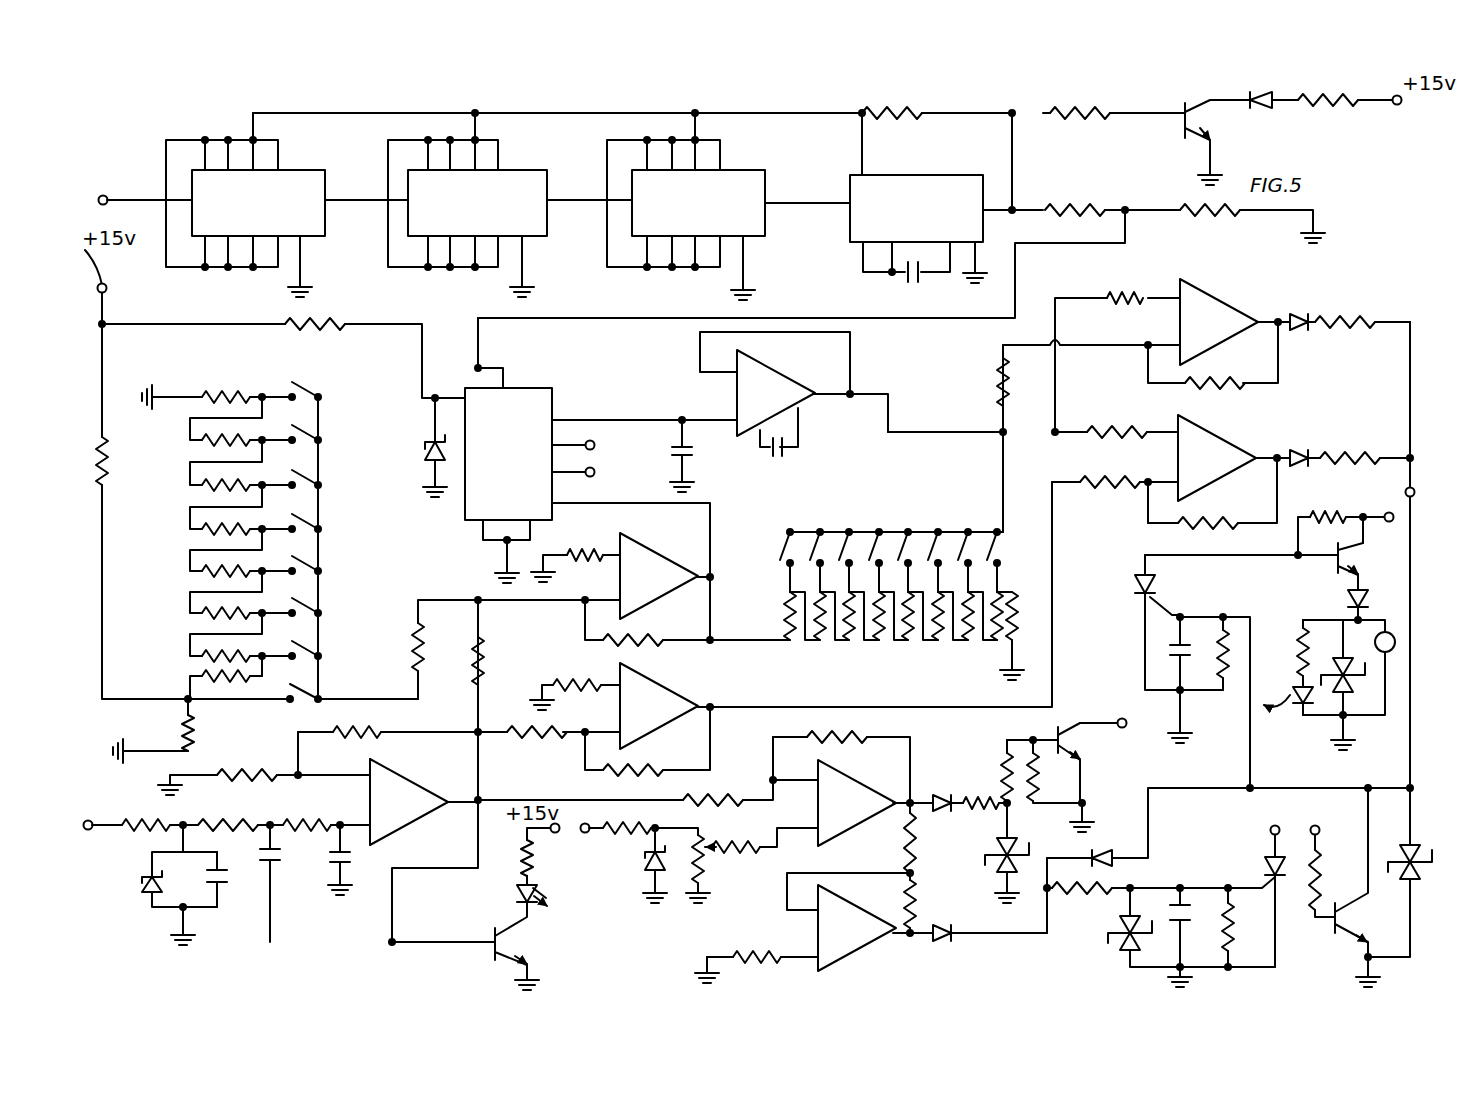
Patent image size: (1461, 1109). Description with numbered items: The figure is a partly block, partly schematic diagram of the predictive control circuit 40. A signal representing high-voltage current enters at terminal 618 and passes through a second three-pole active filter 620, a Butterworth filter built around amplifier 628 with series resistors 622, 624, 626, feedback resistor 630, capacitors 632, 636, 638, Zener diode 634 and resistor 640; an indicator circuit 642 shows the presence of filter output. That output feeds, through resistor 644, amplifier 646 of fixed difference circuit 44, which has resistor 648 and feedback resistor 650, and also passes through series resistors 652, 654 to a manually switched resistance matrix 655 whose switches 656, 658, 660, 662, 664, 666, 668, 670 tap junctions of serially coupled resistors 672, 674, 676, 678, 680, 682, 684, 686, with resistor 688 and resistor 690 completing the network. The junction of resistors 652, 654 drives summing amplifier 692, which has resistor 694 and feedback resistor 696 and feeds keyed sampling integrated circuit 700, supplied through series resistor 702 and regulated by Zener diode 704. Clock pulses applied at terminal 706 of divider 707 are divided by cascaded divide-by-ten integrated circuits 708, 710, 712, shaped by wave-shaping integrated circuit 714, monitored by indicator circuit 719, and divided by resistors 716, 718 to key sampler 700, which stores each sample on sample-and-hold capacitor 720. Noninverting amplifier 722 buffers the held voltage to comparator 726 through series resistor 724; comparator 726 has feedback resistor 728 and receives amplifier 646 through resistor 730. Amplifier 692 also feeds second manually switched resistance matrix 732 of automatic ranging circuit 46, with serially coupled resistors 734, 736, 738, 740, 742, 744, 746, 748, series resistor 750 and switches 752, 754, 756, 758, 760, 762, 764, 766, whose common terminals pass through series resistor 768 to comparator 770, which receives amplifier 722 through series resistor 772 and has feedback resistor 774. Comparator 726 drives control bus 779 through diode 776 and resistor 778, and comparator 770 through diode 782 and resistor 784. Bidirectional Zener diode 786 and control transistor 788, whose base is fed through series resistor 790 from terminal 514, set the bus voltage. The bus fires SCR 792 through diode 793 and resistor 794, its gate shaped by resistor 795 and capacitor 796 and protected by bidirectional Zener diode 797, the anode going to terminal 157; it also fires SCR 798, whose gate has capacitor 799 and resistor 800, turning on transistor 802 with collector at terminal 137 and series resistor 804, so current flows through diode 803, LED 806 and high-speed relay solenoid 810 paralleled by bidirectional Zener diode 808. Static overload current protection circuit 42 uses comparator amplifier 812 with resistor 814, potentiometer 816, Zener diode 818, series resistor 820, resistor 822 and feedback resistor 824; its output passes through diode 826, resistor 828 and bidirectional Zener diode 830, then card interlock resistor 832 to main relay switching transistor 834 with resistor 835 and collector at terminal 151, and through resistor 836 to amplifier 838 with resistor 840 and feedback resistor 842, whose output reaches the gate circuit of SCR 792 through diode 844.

The predictive control circuit 40 is at (428, 314).
The static overload current protection circuit 42 is at (664, 930).
The fixed difference circuit 44 is at (1128, 498).
The automatic ranging circuit 46 is at (950, 345).
The terminal 137 is at (1391, 513).
The terminal 151 is at (1125, 718).
The terminal 157 is at (1277, 825).
The terminal 514 is at (1326, 808).
The terminal 618 is at (130, 790).
The second three-pole active filter 620 is at (284, 755).
The series resistor 622 is at (142, 830).
The series resistor 624 is at (248, 822).
The series resistor 626 is at (316, 822).
The amplifier 628 is at (406, 828).
The feedback resistor 630 is at (373, 739).
The capacitor 632 is at (236, 876).
The Zener diode 634 is at (146, 893).
The capacitor 636 is at (352, 858).
The capacitor 638 is at (288, 856).
The resistor 640 is at (265, 770).
The indicator circuit 642 is at (476, 957).
The resistor 644 is at (527, 730).
The amplifier 646 is at (692, 665).
The resistor 648 is at (585, 681).
The feedback resistor 650 is at (634, 770).
The series resistor 652 is at (490, 656).
The series resistor 654 is at (418, 628).
The manually switched resistance matrix 655 is at (247, 378).
The switch 656 is at (304, 692).
The switch 658 is at (305, 649).
The switch 660 is at (305, 606).
The switch 662 is at (305, 564).
The switch 664 is at (305, 522).
The switch 666 is at (305, 478).
The switch 668 is at (305, 433).
The switch 670 is at (305, 390).
The resistor 672 is at (202, 677).
The resistor 674 is at (202, 658).
The resistor 676 is at (202, 615).
The resistor 678 is at (202, 573).
The resistor 680 is at (202, 531).
The resistor 682 is at (202, 487).
The resistor 684 is at (202, 443).
The resistor 686 is at (228, 394).
The resistor 688 is at (188, 732).
The resistor 690 is at (104, 478).
The summing amplifier 692 is at (697, 532).
The resistor 694 is at (564, 555).
The feedback resistor 696 is at (634, 640).
The keyed sampling integrated circuit 700 is at (488, 466).
The series resistor 702 is at (292, 320).
The Zener diode 704 is at (432, 441).
The terminal 706 is at (138, 172).
The divider 707 is at (200, 108).
The divide-by-ten integrated circuit 708 is at (238, 211).
The divide-by-ten integrated circuit 710 is at (458, 211).
The divide-by-ten integrated circuit 712 is at (678, 211).
The wave-shaping integrated circuit 714 is at (896, 217).
The resistor 716 is at (1078, 212).
The resistor 718 is at (1213, 216).
The indicator circuit 719 is at (1298, 119).
The sample-and-hold capacitor 720 is at (673, 449).
The amplifier 722 is at (828, 357).
The series resistor 724 is at (1125, 428).
The amplifier 726 is at (1220, 436).
The feedback resistor 728 is at (1212, 522).
The resistor 730 is at (1105, 478).
The second manually switched resistance matrix 732 is at (765, 590).
The resistor 734 is at (790, 612).
The resistor 736 is at (812, 622).
The resistor 738 is at (845, 622).
The resistor 740 is at (872, 622).
The resistor 742 is at (902, 625).
The resistor 744 is at (932, 625).
The resistor 746 is at (964, 625).
The resistor 748 is at (992, 625).
The series resistor 750 is at (1018, 538).
The switch 752 is at (784, 548).
The switch 754 is at (813, 545).
The switch 756 is at (843, 545).
The switch 758 is at (873, 545).
The switch 760 is at (903, 545).
The switch 762 is at (933, 545).
The switch 764 is at (962, 545).
The switch 766 is at (990, 545).
The series resistor 768 is at (1001, 385).
The amplifier 770 is at (1214, 295).
The series resistor 772 is at (1121, 296).
The feedback resistor 774 is at (1220, 389).
The diode 776 is at (1328, 432).
The resistor 778 is at (1350, 455).
The control bus 779 is at (1406, 491).
The diode 782 is at (1298, 313).
The resistor 784 is at (1344, 312).
The bidirectional Zener diode 786 is at (1408, 786).
The control transistor 788 is at (1346, 952).
The series resistor 790 is at (1321, 890).
The SCR 792 is at (1286, 878).
The diode 793 is at (1106, 852).
The resistor 794 is at (1076, 895).
The resistor 795 is at (1226, 912).
The capacitor 796 is at (1193, 906).
The bidirectional Zener diode 797 is at (1108, 936).
The SCR 798 is at (1133, 578).
The capacitor 799 is at (1170, 648).
The resistor 800 is at (1216, 636).
The transistor 802 is at (1352, 561).
The diode 803 is at (1347, 601).
The series resistor 804 is at (1299, 521).
The LED 806 is at (1296, 708).
The bidirectional Zener diode 808 is at (1358, 697).
The high-speed relay solenoid 810 is at (1392, 633).
The comparator amplifier 812 is at (895, 768).
The resistor 814 is at (720, 852).
The potentiometer 816 is at (714, 872).
The Zener diode 818 is at (641, 857).
The series resistor 820 is at (606, 826).
The resistor 822 is at (745, 797).
The feedback resistor 824 is at (851, 735).
The diode 826 is at (938, 798).
The resistor 828 is at (975, 798).
The bidirectional Zener diode 830 is at (1046, 832).
The card interlock resistor 832 is at (1008, 753).
The main relay switching transistor 834 is at (1082, 741).
The resistor 835 is at (1061, 720).
The resistor 836 is at (908, 826).
The amplifier 838 is at (895, 892).
The resistor 840 is at (752, 953).
The feedback resistor 842 is at (912, 906).
The diode 844 is at (934, 941).